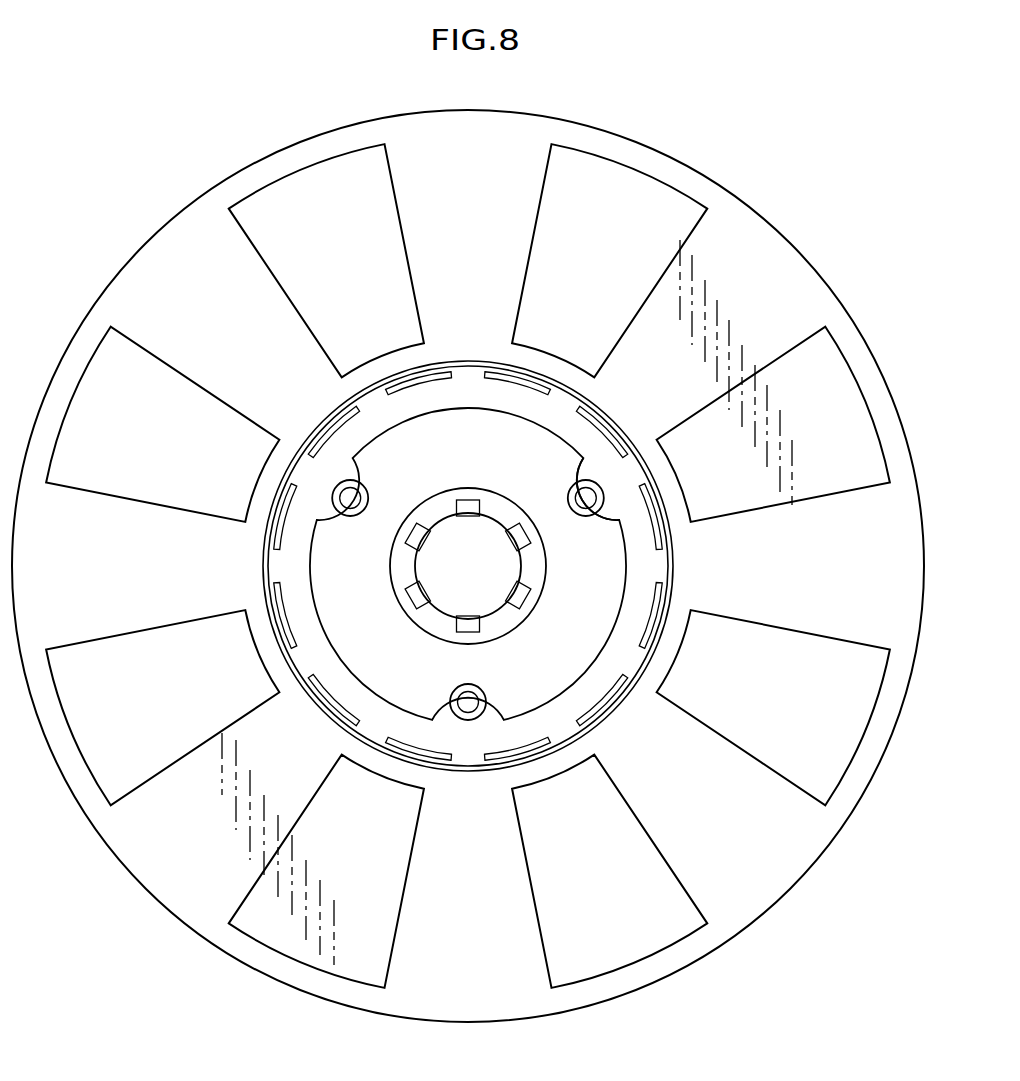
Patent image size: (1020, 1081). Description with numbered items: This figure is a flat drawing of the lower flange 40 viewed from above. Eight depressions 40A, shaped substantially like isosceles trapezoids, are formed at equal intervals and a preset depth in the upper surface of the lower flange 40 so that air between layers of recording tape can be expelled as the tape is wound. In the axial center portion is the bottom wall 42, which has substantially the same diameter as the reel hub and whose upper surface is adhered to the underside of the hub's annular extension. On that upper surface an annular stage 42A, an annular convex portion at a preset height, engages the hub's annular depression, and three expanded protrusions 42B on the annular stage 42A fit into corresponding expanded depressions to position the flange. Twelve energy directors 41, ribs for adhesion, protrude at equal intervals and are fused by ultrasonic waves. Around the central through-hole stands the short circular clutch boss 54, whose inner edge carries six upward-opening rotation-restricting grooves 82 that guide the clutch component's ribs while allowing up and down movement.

The lower flange 40 is at (775, 272).
The depressions 40A is at (618, 180).
The energy directors 41 is at (603, 700).
The bottom wall 42 is at (673, 567).
The annular stage 42A is at (468, 432).
The expanded protrusions 42B is at (622, 478).
The clutch boss 54 is at (391, 590).
The rotation-restricting grooves 82 is at (535, 592).